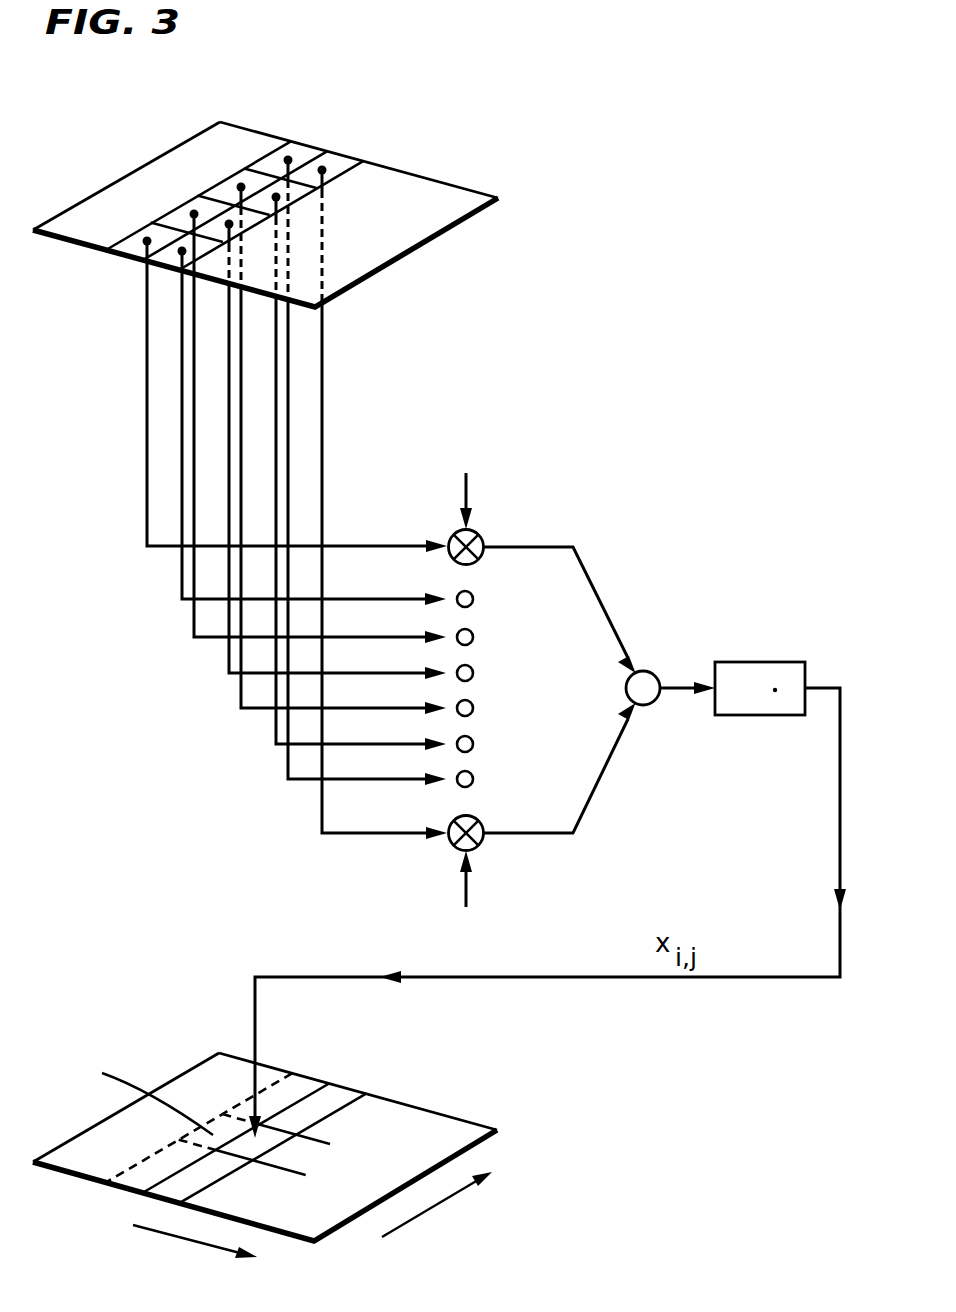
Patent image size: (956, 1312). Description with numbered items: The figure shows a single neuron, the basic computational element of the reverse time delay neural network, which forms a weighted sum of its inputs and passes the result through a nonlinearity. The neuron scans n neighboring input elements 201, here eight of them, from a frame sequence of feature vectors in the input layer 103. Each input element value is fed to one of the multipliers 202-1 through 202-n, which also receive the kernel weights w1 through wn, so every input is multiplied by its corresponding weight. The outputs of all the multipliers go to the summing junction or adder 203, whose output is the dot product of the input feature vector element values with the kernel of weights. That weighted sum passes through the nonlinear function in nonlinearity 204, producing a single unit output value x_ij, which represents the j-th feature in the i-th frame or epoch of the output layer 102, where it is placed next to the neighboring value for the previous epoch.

The layer 103 is at (566, 205).
The neighboring input elements 201 is at (372, 152).
The multiplier 202-1 is at (478, 532).
The multiplier 202-n is at (478, 849).
The summing junction or adder 203 is at (648, 671).
The nonlinearity 204 is at (762, 662).
The layer 102 is at (563, 1136).